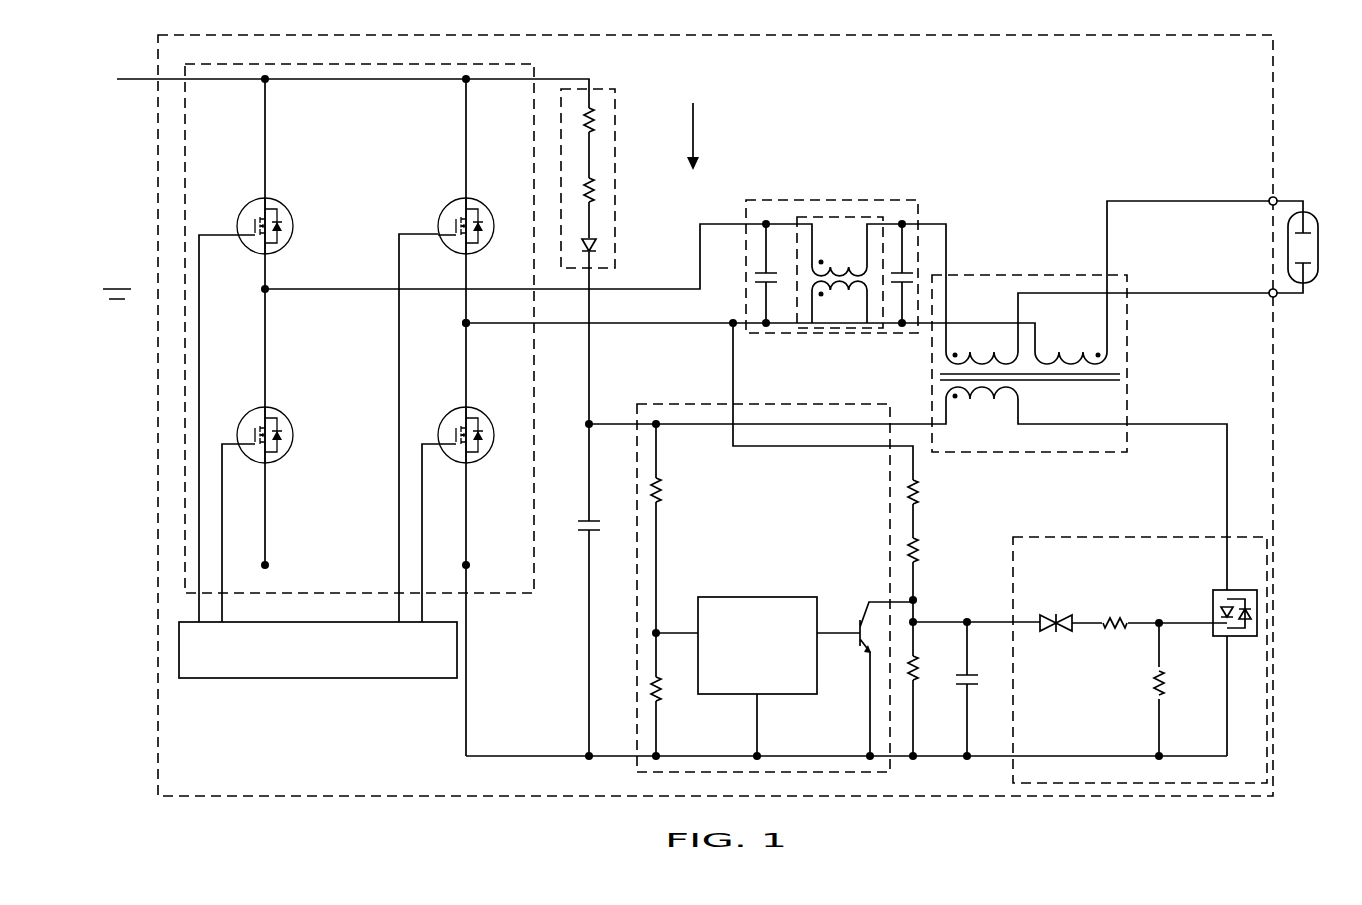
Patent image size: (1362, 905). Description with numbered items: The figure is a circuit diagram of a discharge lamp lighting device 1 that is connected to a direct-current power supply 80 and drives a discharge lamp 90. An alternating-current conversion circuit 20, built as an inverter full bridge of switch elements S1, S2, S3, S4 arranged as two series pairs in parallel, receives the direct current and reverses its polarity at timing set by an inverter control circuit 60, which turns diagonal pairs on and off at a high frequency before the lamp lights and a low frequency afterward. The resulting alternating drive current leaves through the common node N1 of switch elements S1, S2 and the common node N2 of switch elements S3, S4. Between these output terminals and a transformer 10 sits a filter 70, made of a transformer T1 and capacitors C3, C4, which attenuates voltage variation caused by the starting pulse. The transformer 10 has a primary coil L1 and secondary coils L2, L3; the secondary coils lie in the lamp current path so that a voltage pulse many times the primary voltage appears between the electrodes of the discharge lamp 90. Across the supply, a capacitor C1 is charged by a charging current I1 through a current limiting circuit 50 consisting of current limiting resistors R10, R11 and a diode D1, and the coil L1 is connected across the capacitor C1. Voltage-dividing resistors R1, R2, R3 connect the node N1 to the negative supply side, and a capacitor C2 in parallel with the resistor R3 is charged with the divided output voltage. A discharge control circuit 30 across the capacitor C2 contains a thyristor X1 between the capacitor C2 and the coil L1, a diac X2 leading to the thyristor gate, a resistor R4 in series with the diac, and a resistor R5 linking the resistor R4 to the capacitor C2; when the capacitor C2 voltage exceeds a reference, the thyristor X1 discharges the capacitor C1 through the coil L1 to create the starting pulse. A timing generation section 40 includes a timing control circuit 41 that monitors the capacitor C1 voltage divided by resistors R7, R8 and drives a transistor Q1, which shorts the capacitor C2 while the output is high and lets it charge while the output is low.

The discharge lamp lighting device 1 is at (1274, 55).
The transformer 10 is at (1032, 275).
The alternating-current conversion circuit 20 is at (536, 66).
The discharge control circuit 30 is at (1143, 537).
The timing generation section 40 is at (697, 404).
The timing control circuit 41 is at (765, 597).
The current limiting circuit 50 is at (616, 90).
The inverter control circuit 60 is at (380, 678).
The filter 70 is at (761, 200).
The direct-current power supply 80 is at (122, 281).
The discharge lamp 90 is at (1312, 212).
The switch element S1 is at (483, 199).
The switch element S2 is at (483, 408).
The switch element S3 is at (282, 199).
The switch element S4 is at (282, 408).
The common node N1 is at (463, 326).
The common node N2 is at (268, 292).
The voltage-dividing resistor R1 is at (917, 485).
The voltage-dividing resistor R2 is at (917, 545).
The voltage-dividing resistor R3 is at (917, 680).
The resistor R4 is at (1113, 612).
The resistor R5 is at (1156, 689).
The resistor R7 is at (660, 493).
The resistor R8 is at (660, 695).
The current limiting resistor R10 is at (595, 117).
The current limiting resistor R11 is at (595, 187).
The capacitor C1 is at (587, 520).
The capacitor C2 is at (970, 686).
The capacitor C3 is at (764, 273).
The capacitor C4 is at (904, 273).
The diode D1 is at (597, 245).
The primary coil L1 is at (944, 395).
The secondary coil L2 is at (944, 345).
The secondary coil L3 is at (1108, 345).
The transformer T1 is at (845, 216).
The thyristor X1 is at (1212, 592).
The diac X2 is at (1043, 613).
The transistor Q1 is at (856, 640).
The charging current I1 is at (703, 136).